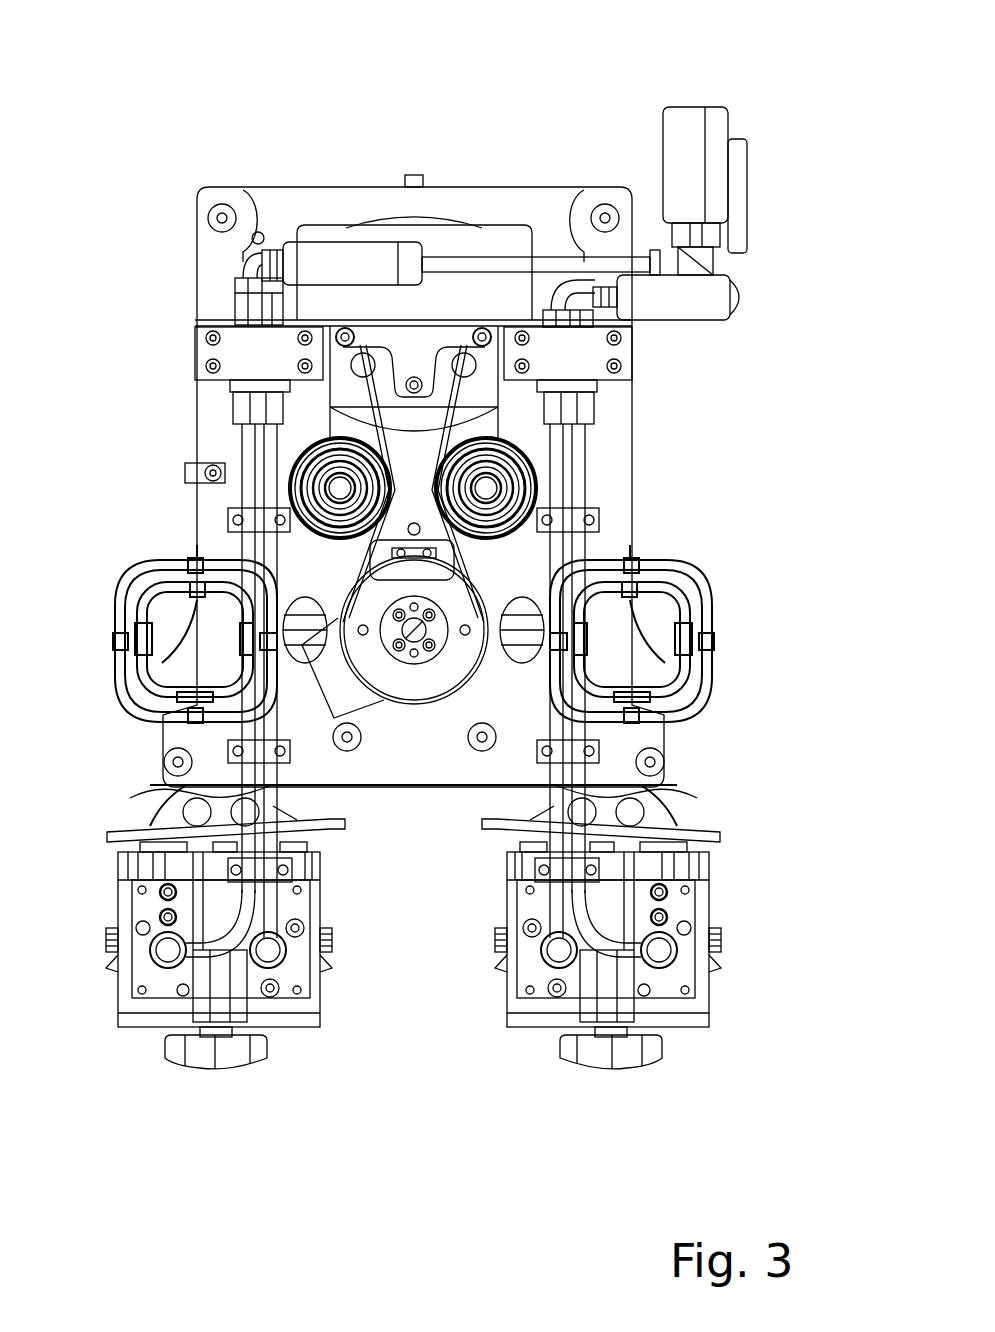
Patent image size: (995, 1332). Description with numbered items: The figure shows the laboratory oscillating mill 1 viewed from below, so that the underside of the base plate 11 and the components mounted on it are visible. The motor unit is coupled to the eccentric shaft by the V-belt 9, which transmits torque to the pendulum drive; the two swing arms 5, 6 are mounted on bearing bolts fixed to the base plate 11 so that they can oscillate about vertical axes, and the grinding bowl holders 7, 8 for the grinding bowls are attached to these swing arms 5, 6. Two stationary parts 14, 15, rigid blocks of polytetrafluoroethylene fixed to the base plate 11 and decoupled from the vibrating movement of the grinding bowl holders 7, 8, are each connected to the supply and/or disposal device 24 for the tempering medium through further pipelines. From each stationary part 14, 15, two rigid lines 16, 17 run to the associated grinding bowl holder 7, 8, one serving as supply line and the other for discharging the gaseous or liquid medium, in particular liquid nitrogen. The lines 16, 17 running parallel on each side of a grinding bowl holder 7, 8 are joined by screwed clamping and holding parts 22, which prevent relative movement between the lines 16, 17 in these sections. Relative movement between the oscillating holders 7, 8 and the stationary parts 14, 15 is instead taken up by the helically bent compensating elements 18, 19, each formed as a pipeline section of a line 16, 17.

The oscillating mill 1 is at (128, 112).
The supply and/or disposal device 24 is at (775, 185).
The base plate 11 is at (215, 412).
The stationary part 14 is at (240, 352).
The stationary part 15 is at (597, 353).
The V-belt 9 is at (358, 558).
The clamping and holding part 22 is at (258, 512).
The line 17 is at (273, 807).
The compensating element 18 is at (112, 670).
The compensating element 19 is at (148, 598).
The swing arm 6 is at (180, 796).
The swing arm 5 is at (652, 798).
The grinding bowl holder 8 is at (100, 1062).
The grinding bowl holder 7 is at (713, 1050).
The line 16 is at (160, 918).